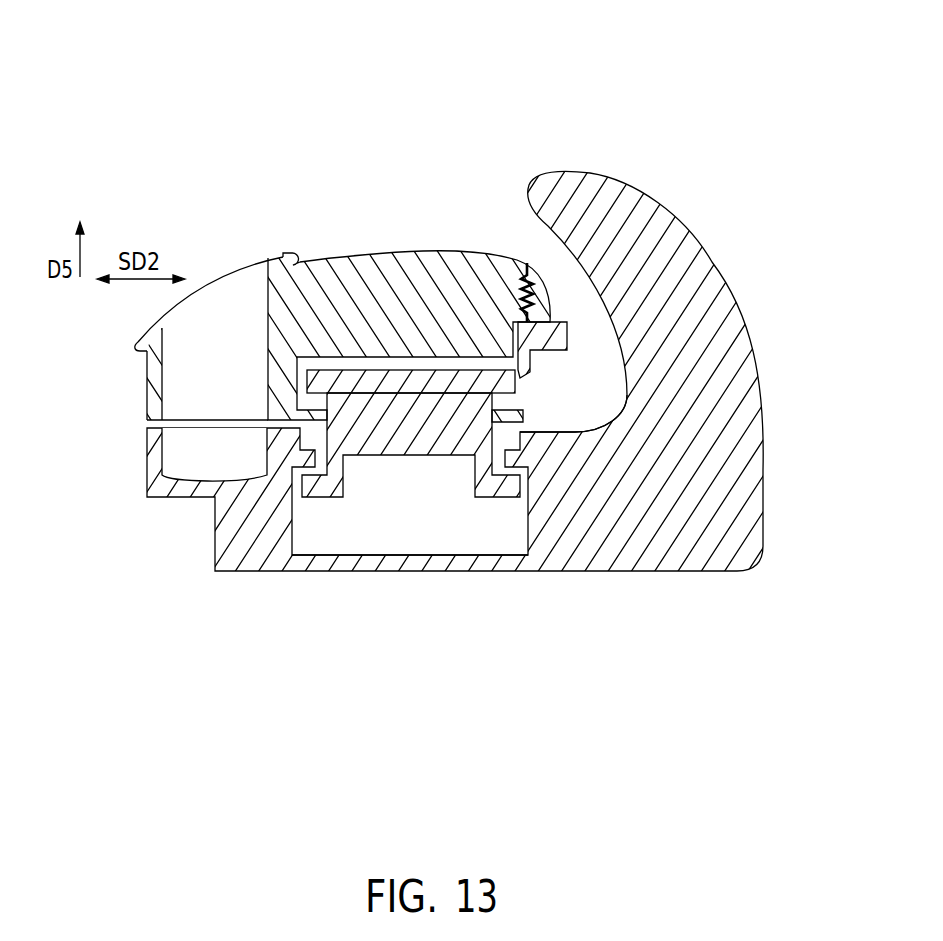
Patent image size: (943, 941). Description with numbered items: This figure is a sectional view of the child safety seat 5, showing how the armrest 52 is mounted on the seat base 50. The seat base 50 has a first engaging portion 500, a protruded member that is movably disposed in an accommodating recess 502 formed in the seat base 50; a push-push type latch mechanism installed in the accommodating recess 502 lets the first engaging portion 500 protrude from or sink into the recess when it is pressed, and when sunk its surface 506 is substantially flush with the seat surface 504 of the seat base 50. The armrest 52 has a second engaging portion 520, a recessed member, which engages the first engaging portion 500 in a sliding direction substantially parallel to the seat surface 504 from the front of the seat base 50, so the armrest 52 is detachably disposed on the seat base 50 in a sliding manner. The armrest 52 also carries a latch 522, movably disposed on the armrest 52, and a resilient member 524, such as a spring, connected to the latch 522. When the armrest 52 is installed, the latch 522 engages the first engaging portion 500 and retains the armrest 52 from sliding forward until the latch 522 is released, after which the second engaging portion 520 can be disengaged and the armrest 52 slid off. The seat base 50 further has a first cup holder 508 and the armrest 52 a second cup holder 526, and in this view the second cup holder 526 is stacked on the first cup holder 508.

The child safety seat 5 is at (673, 72).
The seat base 50 is at (633, 573).
The first engaging portion 500 is at (393, 447).
The accommodating recess 502 is at (450, 566).
The seat surface 504 is at (578, 428).
The surface 506 is at (326, 362).
The first cup holder 508 is at (150, 457).
The armrest 52 is at (367, 253).
The second engaging portion 520 is at (412, 355).
The latch 522 is at (567, 340).
The resilient member 524 is at (490, 258).
The second cup holder 526 is at (150, 390).